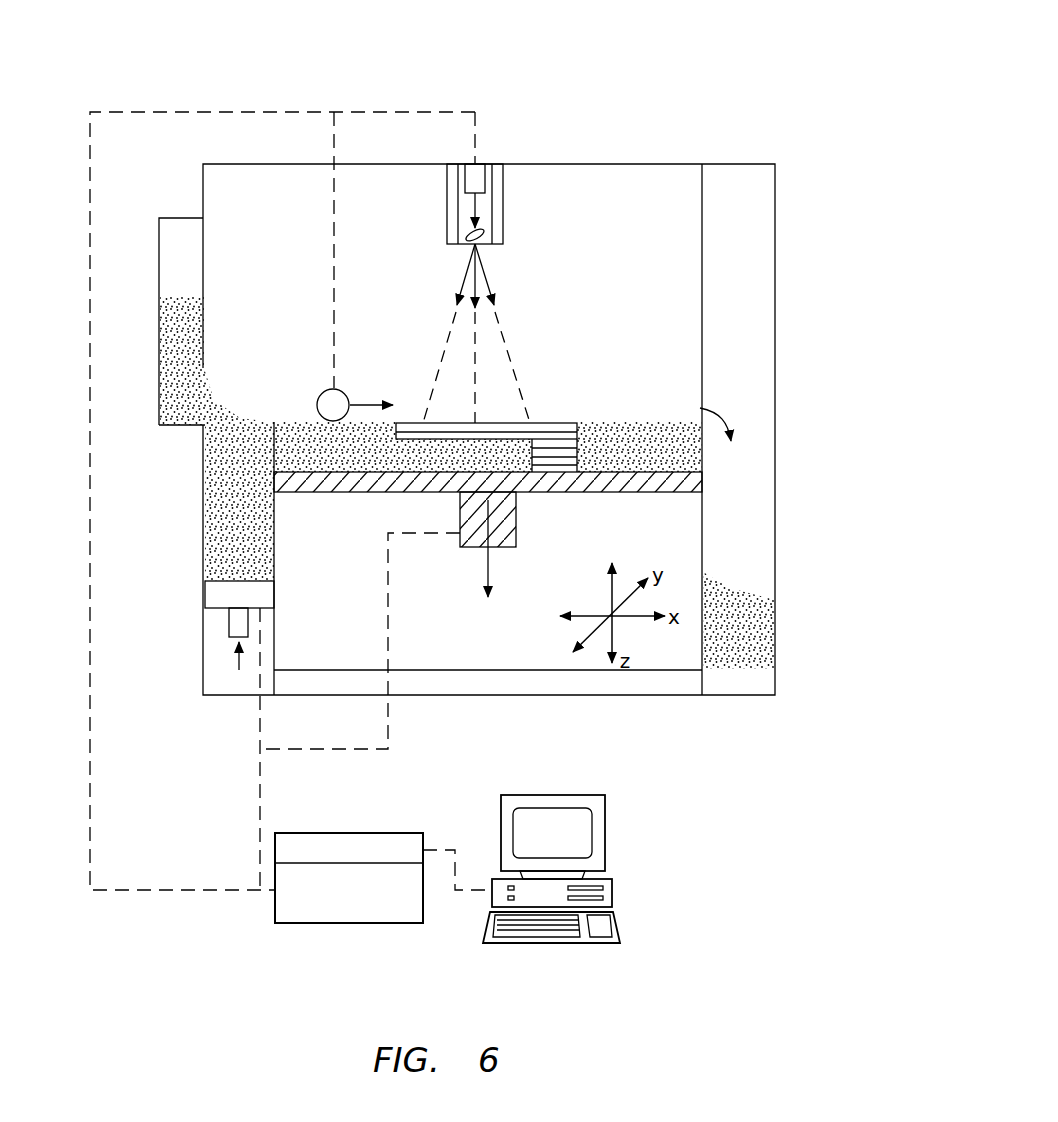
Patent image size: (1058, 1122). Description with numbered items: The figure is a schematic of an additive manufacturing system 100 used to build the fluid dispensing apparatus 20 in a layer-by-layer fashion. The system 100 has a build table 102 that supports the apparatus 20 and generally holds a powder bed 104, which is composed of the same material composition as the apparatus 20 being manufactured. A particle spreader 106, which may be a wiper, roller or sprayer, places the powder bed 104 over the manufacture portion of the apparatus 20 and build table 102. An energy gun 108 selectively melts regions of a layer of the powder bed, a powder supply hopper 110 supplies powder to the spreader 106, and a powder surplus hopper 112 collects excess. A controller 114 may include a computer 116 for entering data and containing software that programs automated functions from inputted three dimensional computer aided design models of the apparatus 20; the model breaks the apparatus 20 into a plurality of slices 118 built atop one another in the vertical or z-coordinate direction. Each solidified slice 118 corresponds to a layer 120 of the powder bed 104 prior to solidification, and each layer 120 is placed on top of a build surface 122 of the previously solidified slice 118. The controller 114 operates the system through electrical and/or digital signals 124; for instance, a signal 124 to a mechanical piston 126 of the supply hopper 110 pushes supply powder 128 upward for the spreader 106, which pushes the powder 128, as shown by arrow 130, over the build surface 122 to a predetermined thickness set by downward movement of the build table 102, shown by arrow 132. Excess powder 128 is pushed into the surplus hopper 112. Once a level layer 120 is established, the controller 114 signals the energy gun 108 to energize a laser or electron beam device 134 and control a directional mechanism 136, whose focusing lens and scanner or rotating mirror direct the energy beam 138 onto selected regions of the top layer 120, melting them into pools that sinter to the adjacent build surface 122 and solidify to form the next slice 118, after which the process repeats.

The additive manufacturing system 100 is at (683, 95).
The build table 102 is at (587, 497).
The powder bed 104 is at (645, 430).
The particle spreader 106 is at (325, 392).
The energy gun 108 is at (508, 200).
The powder supply hopper 110 is at (198, 268).
The powder surplus hopper 112 is at (756, 553).
The controller 114 is at (260, 912).
The computer 116 is at (605, 822).
The slice 118 is at (567, 437).
The layer 120 is at (677, 425).
The build surface 122 is at (495, 425).
The signals 124 is at (248, 108).
The mechanical piston 126 is at (222, 590).
The supply powder 128 is at (208, 400).
The arrow 130 is at (362, 400).
The arrow 132 is at (493, 565).
The laser or electron beam device 134 is at (478, 168).
The directional mechanism 136 is at (483, 246).
The energy beam 138 is at (462, 280).
The apparatus 20 is at (540, 437).